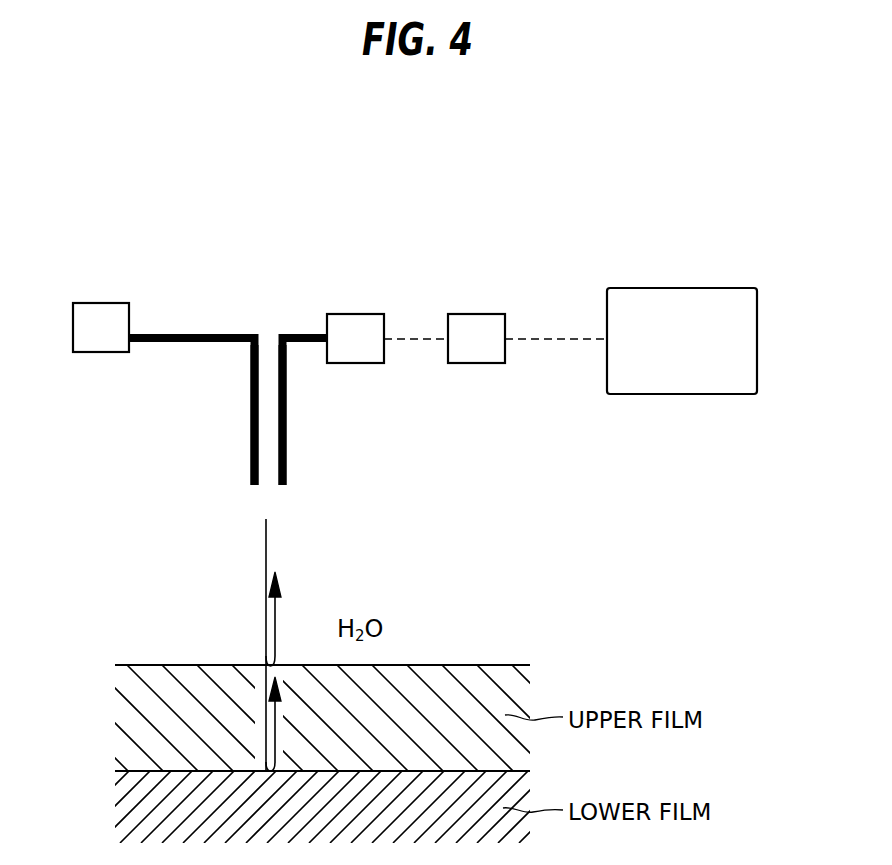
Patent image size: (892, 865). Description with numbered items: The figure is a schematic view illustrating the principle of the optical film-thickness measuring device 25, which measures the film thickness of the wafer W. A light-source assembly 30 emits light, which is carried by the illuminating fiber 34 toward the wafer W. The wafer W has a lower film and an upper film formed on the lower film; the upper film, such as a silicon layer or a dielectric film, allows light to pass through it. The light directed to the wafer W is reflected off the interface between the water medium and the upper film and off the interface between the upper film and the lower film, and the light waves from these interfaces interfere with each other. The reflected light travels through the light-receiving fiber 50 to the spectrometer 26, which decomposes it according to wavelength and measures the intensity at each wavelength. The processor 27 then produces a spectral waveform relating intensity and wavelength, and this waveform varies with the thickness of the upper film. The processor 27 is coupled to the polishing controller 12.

The optical film-thickness measuring device 25 is at (321, 208).
The light-source assembly 30 is at (100, 303).
The illuminating fiber 34 is at (251, 443).
The light-receiving fiber 50 is at (287, 453).
The spectrometer 26 is at (357, 314).
The processor 27 is at (478, 314).
The polishing controller 12 is at (684, 288).
The wafer W is at (167, 645).